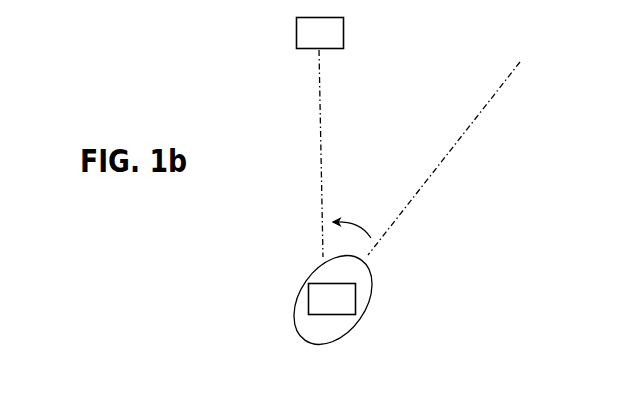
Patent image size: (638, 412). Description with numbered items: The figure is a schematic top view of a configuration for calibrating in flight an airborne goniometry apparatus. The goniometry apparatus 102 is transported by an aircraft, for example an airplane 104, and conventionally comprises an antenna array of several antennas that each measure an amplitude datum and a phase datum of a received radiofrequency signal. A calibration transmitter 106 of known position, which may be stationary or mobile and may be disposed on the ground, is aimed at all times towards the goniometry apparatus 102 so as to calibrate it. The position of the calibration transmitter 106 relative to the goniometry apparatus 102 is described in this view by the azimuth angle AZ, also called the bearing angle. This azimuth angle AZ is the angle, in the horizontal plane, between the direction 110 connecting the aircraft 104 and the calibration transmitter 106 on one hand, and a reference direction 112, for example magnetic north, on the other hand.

The goniometry apparatus 102 is at (318, 306).
The airplane 104 is at (374, 284).
The calibration transmitter 106 is at (306, 42).
The direction connecting the aircraft and the calibration transmitter 110 is at (320, 128).
The reference direction 112 is at (453, 145).
The azimuth angle AZ is at (352, 218).